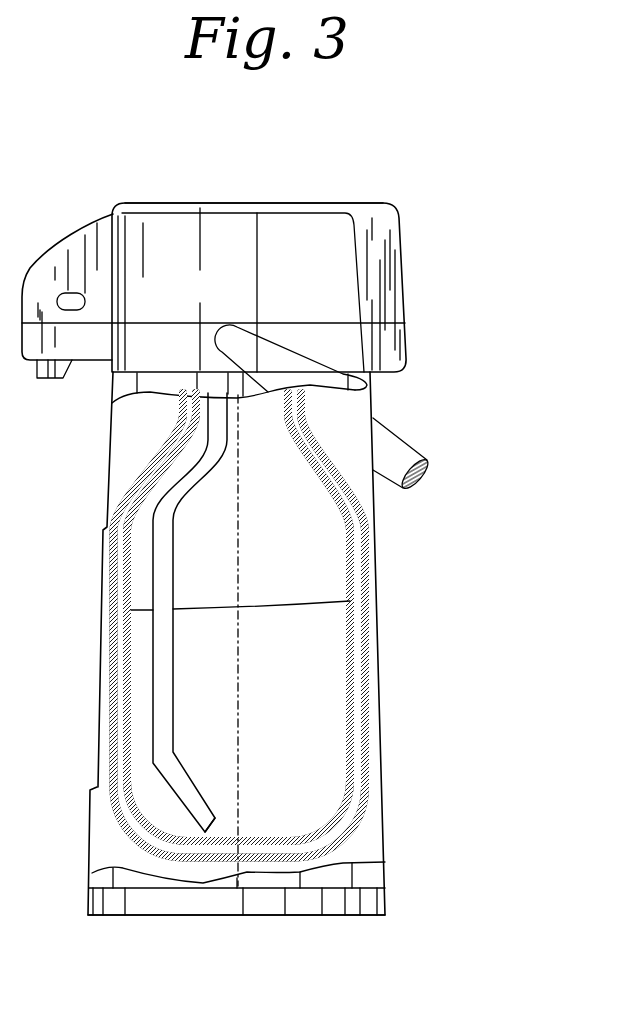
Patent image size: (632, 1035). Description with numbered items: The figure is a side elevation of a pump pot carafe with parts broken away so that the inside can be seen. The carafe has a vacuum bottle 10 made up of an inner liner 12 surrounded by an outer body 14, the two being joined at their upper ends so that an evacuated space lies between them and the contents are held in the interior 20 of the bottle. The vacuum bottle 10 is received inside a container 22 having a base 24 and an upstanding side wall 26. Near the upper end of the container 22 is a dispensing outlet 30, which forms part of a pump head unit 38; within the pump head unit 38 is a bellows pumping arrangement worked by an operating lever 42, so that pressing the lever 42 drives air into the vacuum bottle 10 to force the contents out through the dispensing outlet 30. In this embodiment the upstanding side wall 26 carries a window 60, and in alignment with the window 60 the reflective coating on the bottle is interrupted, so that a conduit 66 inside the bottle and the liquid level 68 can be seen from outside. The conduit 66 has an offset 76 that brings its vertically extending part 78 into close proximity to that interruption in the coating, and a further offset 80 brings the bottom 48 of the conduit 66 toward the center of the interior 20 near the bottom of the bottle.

The vacuum bottle 10 is at (118, 805).
The inner liner 12 is at (348, 637).
The outer body 14 is at (368, 633).
The interior of the vacuum bottle 20 is at (286, 748).
The container 22 is at (100, 507).
The base 24 is at (377, 903).
The upstanding side wall 26 is at (380, 683).
The dispensing outlet 30 is at (52, 381).
The pump head unit 38 is at (299, 198).
The operating lever 42 is at (222, 203).
The bottom of the conduit 48 is at (220, 823).
The window 60 is at (104, 530).
The conduit 66 is at (162, 692).
The liquid level 68 is at (325, 602).
The offset 76 is at (188, 487).
The vertically extending part 78 is at (162, 632).
The further offset 80 is at (180, 803).